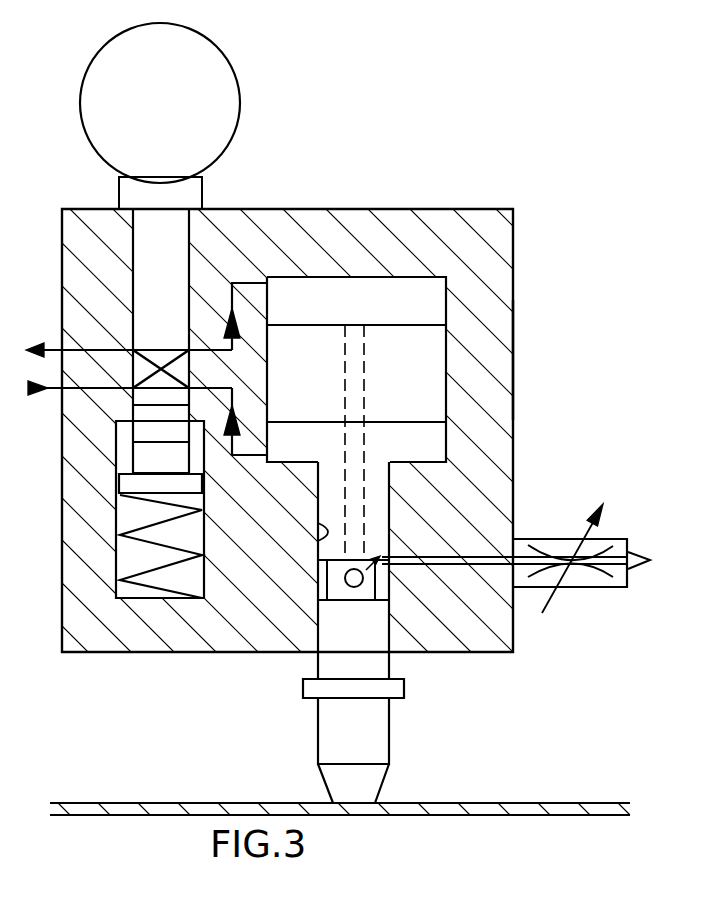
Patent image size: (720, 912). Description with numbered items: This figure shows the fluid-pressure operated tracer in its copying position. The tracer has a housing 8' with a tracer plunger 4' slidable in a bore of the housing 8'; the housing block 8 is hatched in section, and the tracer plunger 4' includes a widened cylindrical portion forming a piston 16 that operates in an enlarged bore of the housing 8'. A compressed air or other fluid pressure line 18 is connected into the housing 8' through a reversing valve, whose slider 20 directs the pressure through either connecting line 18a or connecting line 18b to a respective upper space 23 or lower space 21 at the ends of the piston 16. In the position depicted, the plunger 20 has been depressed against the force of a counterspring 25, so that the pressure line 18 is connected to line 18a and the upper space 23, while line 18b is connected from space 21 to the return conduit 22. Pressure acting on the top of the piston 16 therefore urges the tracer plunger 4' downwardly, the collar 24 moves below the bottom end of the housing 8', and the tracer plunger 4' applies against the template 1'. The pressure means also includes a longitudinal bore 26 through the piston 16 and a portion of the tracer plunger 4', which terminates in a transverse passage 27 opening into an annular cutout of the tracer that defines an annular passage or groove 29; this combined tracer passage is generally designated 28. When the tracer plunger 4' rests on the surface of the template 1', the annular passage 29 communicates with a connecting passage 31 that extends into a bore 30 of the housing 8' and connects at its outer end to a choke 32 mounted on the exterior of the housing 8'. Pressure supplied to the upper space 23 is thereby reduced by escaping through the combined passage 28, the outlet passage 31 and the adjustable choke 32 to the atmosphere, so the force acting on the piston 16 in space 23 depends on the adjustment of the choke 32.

The template 1' is at (340, 851).
The tracer plunger 4' is at (320, 733).
The housing block 8 is at (277, 446).
The housing 8' is at (527, 360).
The piston 16 is at (410, 363).
The fluid pressure line 18 is at (52, 390).
The connecting line 18a is at (240, 283).
The connecting line 18b is at (236, 455).
The slider 20 is at (163, 238).
The space 21 is at (422, 443).
The discharge line 22 is at (53, 348).
The space 23 is at (428, 302).
The collar 24 is at (398, 690).
The counterspring 25 is at (140, 543).
The longitudinal bore 26 is at (357, 502).
The transverse passage 27 is at (362, 587).
The tracer passage 28 is at (378, 558).
The annular passage 29 is at (318, 577).
The bore 30 is at (318, 540).
The connecting passage 31 is at (495, 563).
The choke 32 is at (620, 572).